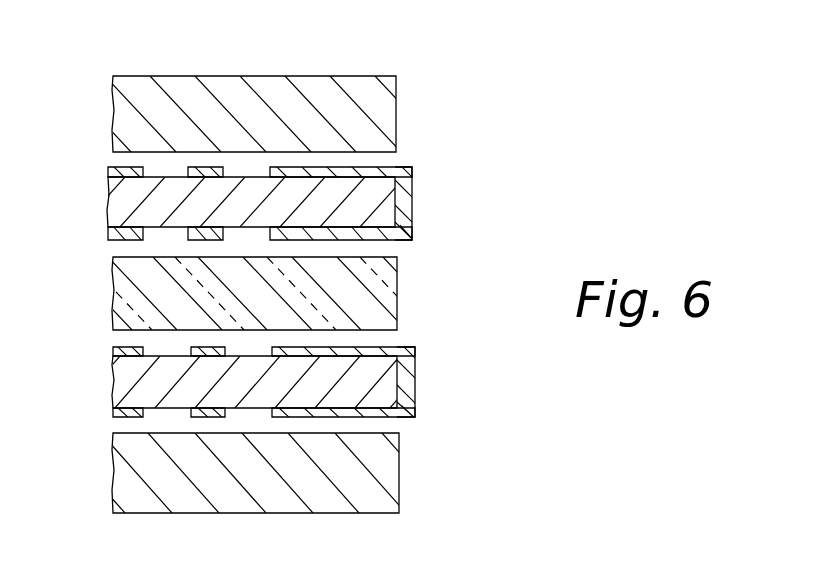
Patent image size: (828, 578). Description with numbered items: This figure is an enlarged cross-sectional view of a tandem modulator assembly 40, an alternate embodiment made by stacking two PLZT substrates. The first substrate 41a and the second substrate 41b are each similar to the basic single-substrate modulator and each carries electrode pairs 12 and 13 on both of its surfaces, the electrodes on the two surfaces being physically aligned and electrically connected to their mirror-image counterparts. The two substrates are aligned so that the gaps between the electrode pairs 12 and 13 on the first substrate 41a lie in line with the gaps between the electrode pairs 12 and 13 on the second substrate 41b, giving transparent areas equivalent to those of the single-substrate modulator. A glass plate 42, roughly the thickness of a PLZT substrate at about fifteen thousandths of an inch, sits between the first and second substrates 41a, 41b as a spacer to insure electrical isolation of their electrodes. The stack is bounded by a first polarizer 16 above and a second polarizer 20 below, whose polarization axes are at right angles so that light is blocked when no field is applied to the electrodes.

The first electrode 12 is at (130, 167).
The second electrode 13 is at (223, 227).
The first polarizer 16 is at (395, 107).
The second polarizer 20 is at (397, 468).
The tandem modulator assembly 40 is at (592, 138).
The first substrate 41a is at (383, 193).
The second substrate 41b is at (393, 377).
The glass plate 42 is at (397, 292).